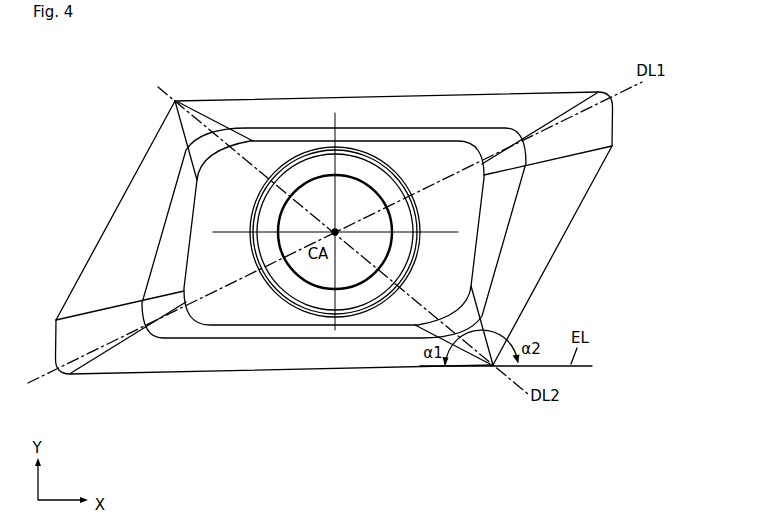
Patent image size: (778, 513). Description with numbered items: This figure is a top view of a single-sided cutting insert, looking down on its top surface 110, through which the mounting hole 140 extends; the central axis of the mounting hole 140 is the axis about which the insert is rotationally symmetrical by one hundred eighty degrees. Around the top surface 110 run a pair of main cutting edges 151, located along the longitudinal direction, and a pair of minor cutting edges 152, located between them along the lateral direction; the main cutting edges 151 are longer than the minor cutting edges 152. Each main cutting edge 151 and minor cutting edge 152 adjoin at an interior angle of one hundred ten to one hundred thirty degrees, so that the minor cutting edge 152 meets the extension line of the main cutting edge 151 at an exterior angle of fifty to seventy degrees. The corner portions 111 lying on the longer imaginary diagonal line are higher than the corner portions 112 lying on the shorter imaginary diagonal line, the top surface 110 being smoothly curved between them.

The top surface 110 is at (258, 122).
The corner portions 111 is at (627, 101).
The corner portions 112 is at (177, 98).
The mounting hole 140 is at (352, 268).
The main cutting edges 151 is at (368, 91).
The minor cutting edges 152 is at (116, 211).